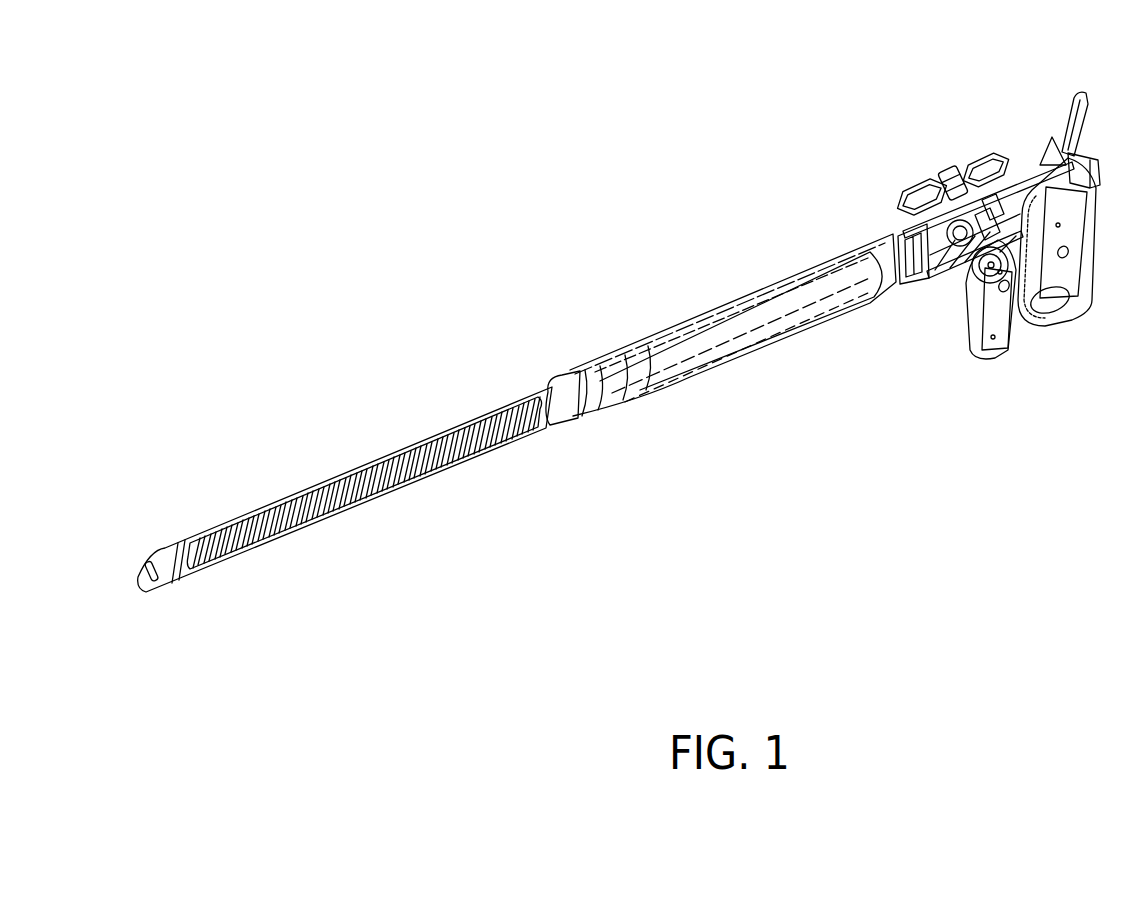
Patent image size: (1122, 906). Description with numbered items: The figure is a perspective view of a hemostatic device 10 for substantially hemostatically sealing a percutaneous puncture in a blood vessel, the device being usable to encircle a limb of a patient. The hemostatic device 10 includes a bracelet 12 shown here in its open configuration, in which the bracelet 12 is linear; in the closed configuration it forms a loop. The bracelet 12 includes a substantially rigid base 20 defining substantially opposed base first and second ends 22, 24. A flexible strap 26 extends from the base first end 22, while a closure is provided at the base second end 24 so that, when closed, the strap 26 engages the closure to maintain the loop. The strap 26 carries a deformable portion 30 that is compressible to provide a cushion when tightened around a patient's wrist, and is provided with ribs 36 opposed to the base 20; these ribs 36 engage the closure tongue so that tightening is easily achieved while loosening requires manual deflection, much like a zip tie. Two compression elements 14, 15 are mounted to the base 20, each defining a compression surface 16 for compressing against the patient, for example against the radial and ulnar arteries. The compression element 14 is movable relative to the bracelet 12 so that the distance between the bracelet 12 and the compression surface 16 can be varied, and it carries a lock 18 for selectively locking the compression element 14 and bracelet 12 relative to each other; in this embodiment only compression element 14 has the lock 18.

The hemostatic device 10 is at (363, 190).
The bracelet 12 is at (721, 336).
The compression element 14 is at (1066, 324).
The compression element 15 is at (990, 383).
The compression surface 16 is at (1080, 244).
The lock 18 is at (938, 153).
The base 20 is at (1033, 156).
The base first end 22 is at (900, 232).
The base second end 24 is at (1048, 150).
The strap 26 is at (373, 493).
The deformable portion 30 is at (752, 318).
The ribs 36 is at (311, 513).